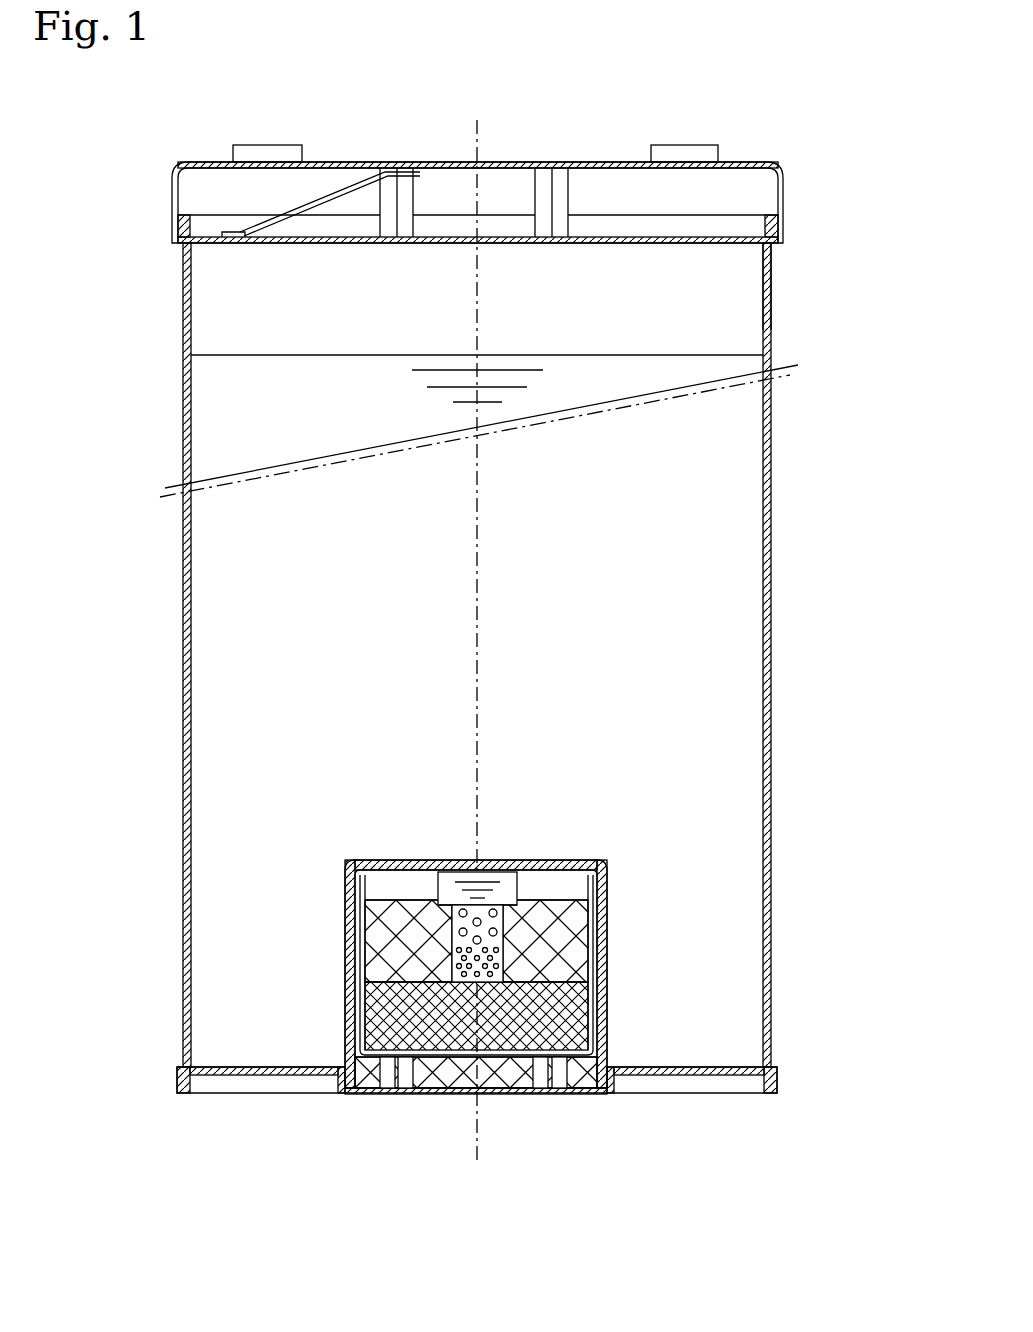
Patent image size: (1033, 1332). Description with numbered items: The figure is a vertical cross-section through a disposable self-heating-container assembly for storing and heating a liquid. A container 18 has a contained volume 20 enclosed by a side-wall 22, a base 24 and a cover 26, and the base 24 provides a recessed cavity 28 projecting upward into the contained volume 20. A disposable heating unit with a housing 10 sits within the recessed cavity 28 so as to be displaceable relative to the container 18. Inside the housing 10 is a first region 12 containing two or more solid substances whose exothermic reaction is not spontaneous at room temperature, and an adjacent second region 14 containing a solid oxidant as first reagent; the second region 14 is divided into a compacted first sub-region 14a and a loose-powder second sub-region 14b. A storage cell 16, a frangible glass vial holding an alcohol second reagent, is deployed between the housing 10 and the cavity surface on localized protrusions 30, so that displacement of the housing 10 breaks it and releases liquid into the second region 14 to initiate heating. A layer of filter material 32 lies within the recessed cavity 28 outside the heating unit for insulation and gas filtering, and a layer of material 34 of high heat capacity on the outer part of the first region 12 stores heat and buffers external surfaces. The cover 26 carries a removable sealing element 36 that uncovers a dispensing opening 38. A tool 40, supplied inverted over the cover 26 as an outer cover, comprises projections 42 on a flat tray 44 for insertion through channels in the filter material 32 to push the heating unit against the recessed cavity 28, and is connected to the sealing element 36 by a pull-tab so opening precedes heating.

The housing 10 is at (607, 987).
The first region 12 is at (567, 943).
The second region 14 is at (503, 937).
The first sub-region 14a is at (452, 980).
The second sub-region 14b is at (453, 940).
The storage cell 16 is at (520, 872).
The container 18 is at (772, 556).
The contained volume 20 is at (680, 690).
The side-wall 22 is at (772, 445).
The base 24 is at (698, 1075).
The cover 26 is at (772, 250).
The recessed cavity 28 is at (607, 1027).
The localized protrusions 30 is at (453, 903).
The filter material 32 is at (560, 1083).
The layer of material 34 is at (385, 1065).
The removable sealing element 36 is at (238, 240).
The dispensing opening 38 is at (183, 250).
The tool 40 is at (783, 172).
The projections 42 is at (562, 192).
The flat tray 44 is at (388, 172).